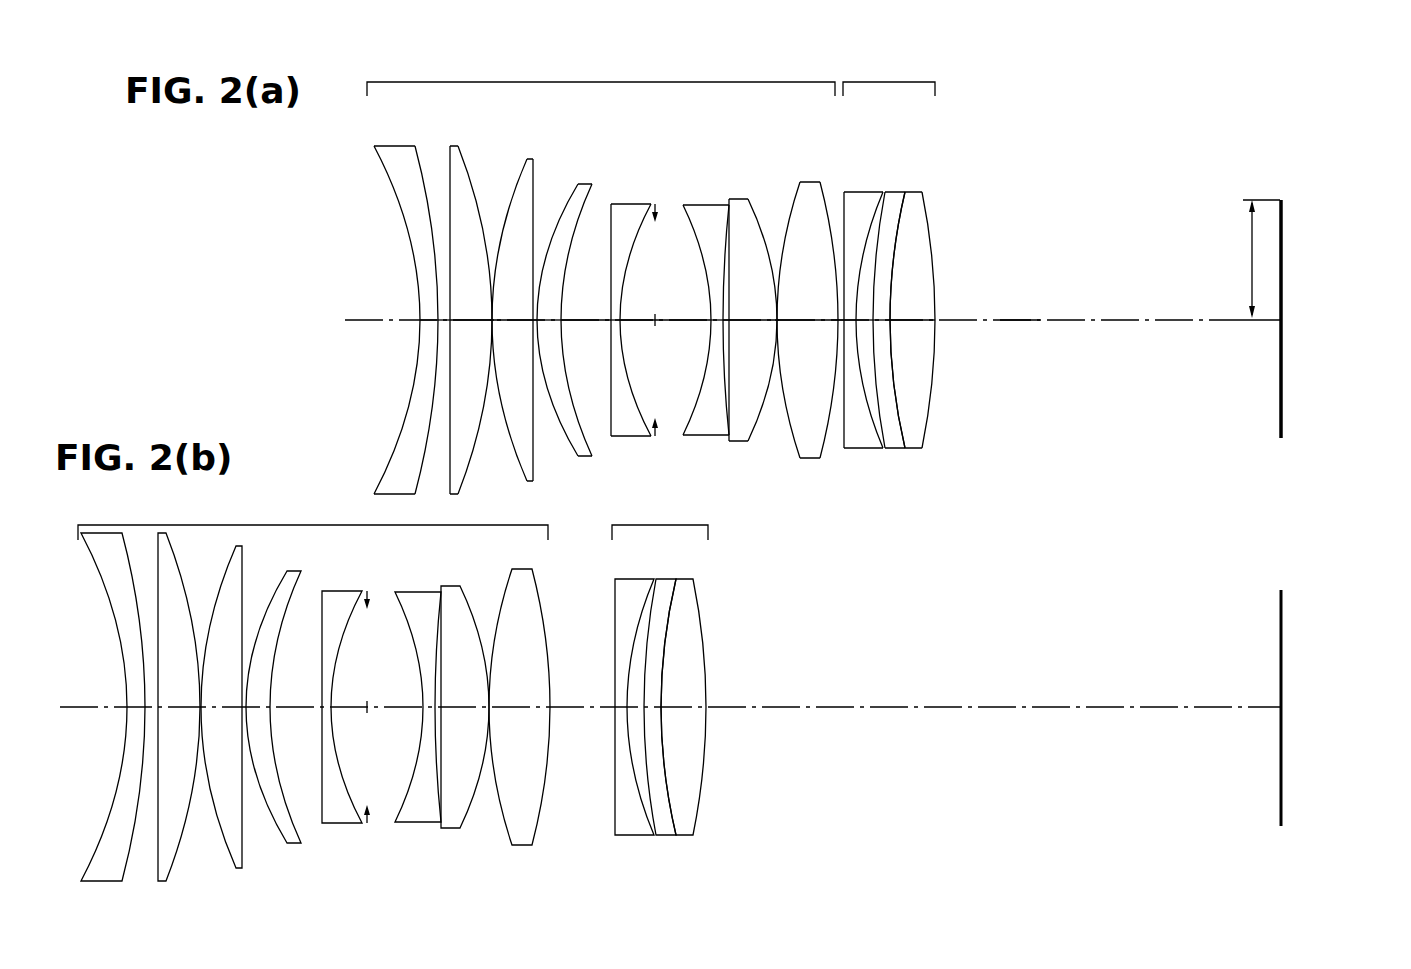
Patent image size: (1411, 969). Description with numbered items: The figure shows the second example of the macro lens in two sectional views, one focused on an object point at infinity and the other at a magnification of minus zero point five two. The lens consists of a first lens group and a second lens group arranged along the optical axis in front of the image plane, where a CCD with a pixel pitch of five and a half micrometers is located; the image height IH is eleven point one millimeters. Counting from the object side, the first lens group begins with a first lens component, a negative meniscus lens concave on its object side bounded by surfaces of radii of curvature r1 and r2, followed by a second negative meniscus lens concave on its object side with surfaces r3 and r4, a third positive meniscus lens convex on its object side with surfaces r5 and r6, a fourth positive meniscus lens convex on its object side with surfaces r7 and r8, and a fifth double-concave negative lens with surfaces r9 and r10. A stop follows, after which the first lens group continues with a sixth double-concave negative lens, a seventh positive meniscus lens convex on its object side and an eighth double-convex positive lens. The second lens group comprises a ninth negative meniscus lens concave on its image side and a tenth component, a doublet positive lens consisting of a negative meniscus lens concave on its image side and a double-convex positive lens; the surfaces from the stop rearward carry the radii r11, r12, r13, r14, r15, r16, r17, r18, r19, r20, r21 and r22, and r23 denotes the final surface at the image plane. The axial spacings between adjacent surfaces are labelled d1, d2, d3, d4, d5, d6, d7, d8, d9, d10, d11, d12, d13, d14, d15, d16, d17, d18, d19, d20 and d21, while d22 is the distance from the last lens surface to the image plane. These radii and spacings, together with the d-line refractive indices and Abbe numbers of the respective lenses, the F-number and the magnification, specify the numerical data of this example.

The image height IH is at (1259, 259).
The radius of curvature of first lens surface r1 is at (381, 168).
The radius of curvature of second lens surface r2 is at (416, 160).
The radius of curvature of third lens surface r3 is at (449, 158).
The radius of curvature of fourth lens surface r4 is at (459, 152).
The radius of curvature of fifth lens surface r5 is at (522, 172).
The radius of curvature of sixth lens surface r6 is at (534, 165).
The radius of curvature of seventh lens surface r7 is at (577, 190).
The radius of curvature of eighth lens surface r8 is at (593, 188).
The radius of curvature of ninth lens surface r9 is at (611, 210).
The radius of curvature of tenth lens surface r10 is at (650, 210).
The radius of curvature of eleventh surface r11 is at (682, 212).
The radius of curvature of twelfth lens surface r12 is at (700, 222).
The radius of curvature of thirteenth lens surface r13 is at (727, 200).
The radius of curvature of fourteenth lens surface r14 is at (748, 198).
The radius of curvature of fifteenth lens surface r15 is at (772, 182).
The radius of curvature of sixteenth lens surface r16 is at (806, 182).
The radius of curvature of seventeenth lens surface r17 is at (845, 194).
The radius of curvature of eighteenth lens surface r18 is at (870, 196).
The radius of curvature of nineteenth lens surface r19 is at (884, 196).
The radius of curvature of twentieth lens surface r20 is at (895, 196).
The radius of curvature of twenty-first lens surface r21 is at (910, 196).
The radius of curvature of twenty-second lens surface r22 is at (925, 200).
The radius of curvature of twenty-third surface r23 is at (1283, 215).
The spacing between first and second surfaces d1 is at (424, 330).
The spacing between second and third surfaces d2 is at (441, 335).
The spacing between third and fourth surfaces d3 is at (471, 339).
The spacing between fourth and fifth surfaces d4 is at (492, 400).
The spacing between fifth and sixth surfaces d5 is at (512, 339).
The spacing between sixth and seventh surfaces d6 is at (540, 412).
The spacing between seventh and eighth surfaces d7 is at (575, 458).
The spacing between eighth and ninth surfaces d8 is at (586, 339).
The spacing between ninth and tenth surfaces d9 is at (618, 438).
The spacing between tenth and eleventh surfaces d10 is at (642, 339).
The spacing between eleventh and twelfth surfaces d11 is at (683, 339).
The spacing between twelfth and thirteenth surfaces d12 is at (695, 437).
The spacing between thirteenth and fourteenth surfaces d13 is at (729, 440).
The spacing between fourteenth and fifteenth surfaces d14 is at (753, 339).
The spacing between fifteenth and sixteenth surfaces d15 is at (780, 452).
The spacing between sixteenth and seventeenth surfaces d16 is at (807, 339).
The spacing between seventeenth and eighteenth surfaces d17 is at (848, 450).
The spacing between eighteenth and nineteenth surfaces d18 is at (862, 450).
The spacing between nineteenth and twentieth surfaces d19 is at (878, 450).
The spacing between twentieth and twenty-first surfaces d20 is at (893, 450).
The spacing between twenty-first and twenty-second surfaces d21 is at (912, 339).
The spacing between twenty-second surface and image plane d22 is at (1054, 339).